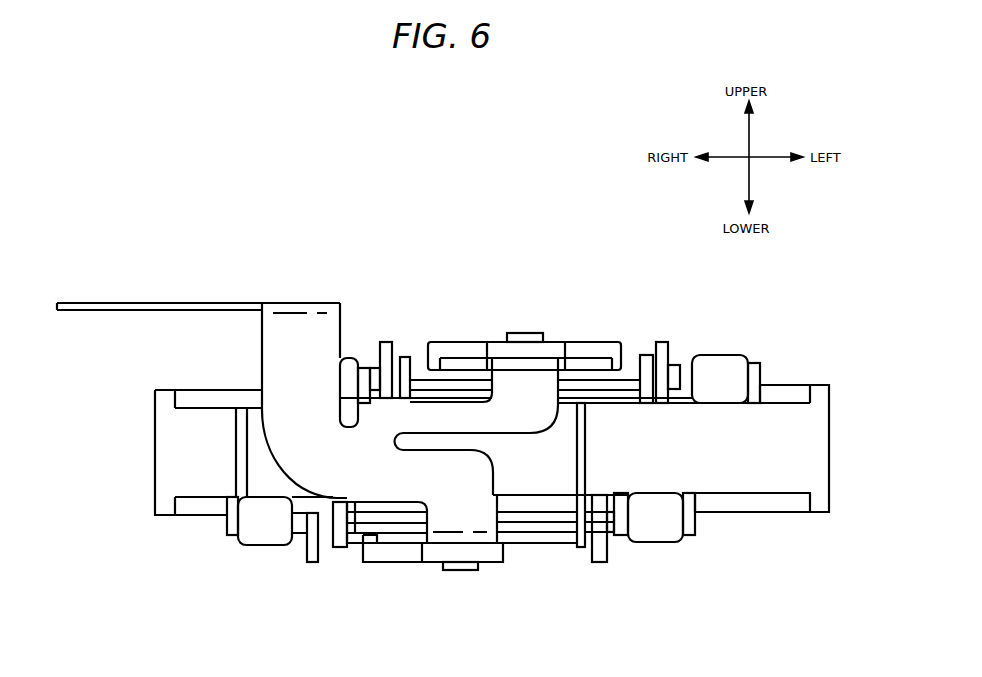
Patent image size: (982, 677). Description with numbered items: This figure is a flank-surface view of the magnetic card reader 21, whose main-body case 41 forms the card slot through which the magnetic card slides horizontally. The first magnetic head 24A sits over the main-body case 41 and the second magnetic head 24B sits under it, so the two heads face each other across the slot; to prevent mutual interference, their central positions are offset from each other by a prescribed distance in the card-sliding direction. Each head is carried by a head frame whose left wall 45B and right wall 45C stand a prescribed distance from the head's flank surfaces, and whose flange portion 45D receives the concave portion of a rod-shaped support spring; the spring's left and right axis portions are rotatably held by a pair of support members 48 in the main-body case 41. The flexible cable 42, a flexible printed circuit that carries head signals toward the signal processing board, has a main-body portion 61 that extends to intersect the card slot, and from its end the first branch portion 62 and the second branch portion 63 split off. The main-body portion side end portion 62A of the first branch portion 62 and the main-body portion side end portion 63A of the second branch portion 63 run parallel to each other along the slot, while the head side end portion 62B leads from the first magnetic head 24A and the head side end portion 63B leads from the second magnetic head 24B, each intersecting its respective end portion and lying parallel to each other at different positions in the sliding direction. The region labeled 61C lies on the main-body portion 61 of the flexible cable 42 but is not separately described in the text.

The magnetic card reader 21 is at (508, 230).
The main-body case 41 is at (790, 413).
The flexible cable 42 is at (188, 302).
The main-body portion 61 is at (344, 308).
The plate portion of arm member 61C is at (112, 303).
The support member 48 is at (345, 380).
The left wall 45B is at (646, 362).
The right wall 45C is at (404, 362).
The flange portion 45D is at (603, 358).
The first magnetic head 24A is at (583, 345).
The second magnetic head 24B is at (360, 540).
The first branch portion 62 is at (603, 628).
The main-body portion side end portion 62A is at (452, 420).
The head side end portion 62B is at (528, 380).
The second branch portion 63 is at (452, 628).
The main-body portion side end portion 63A is at (405, 467).
The head side end portion 63B is at (443, 538).